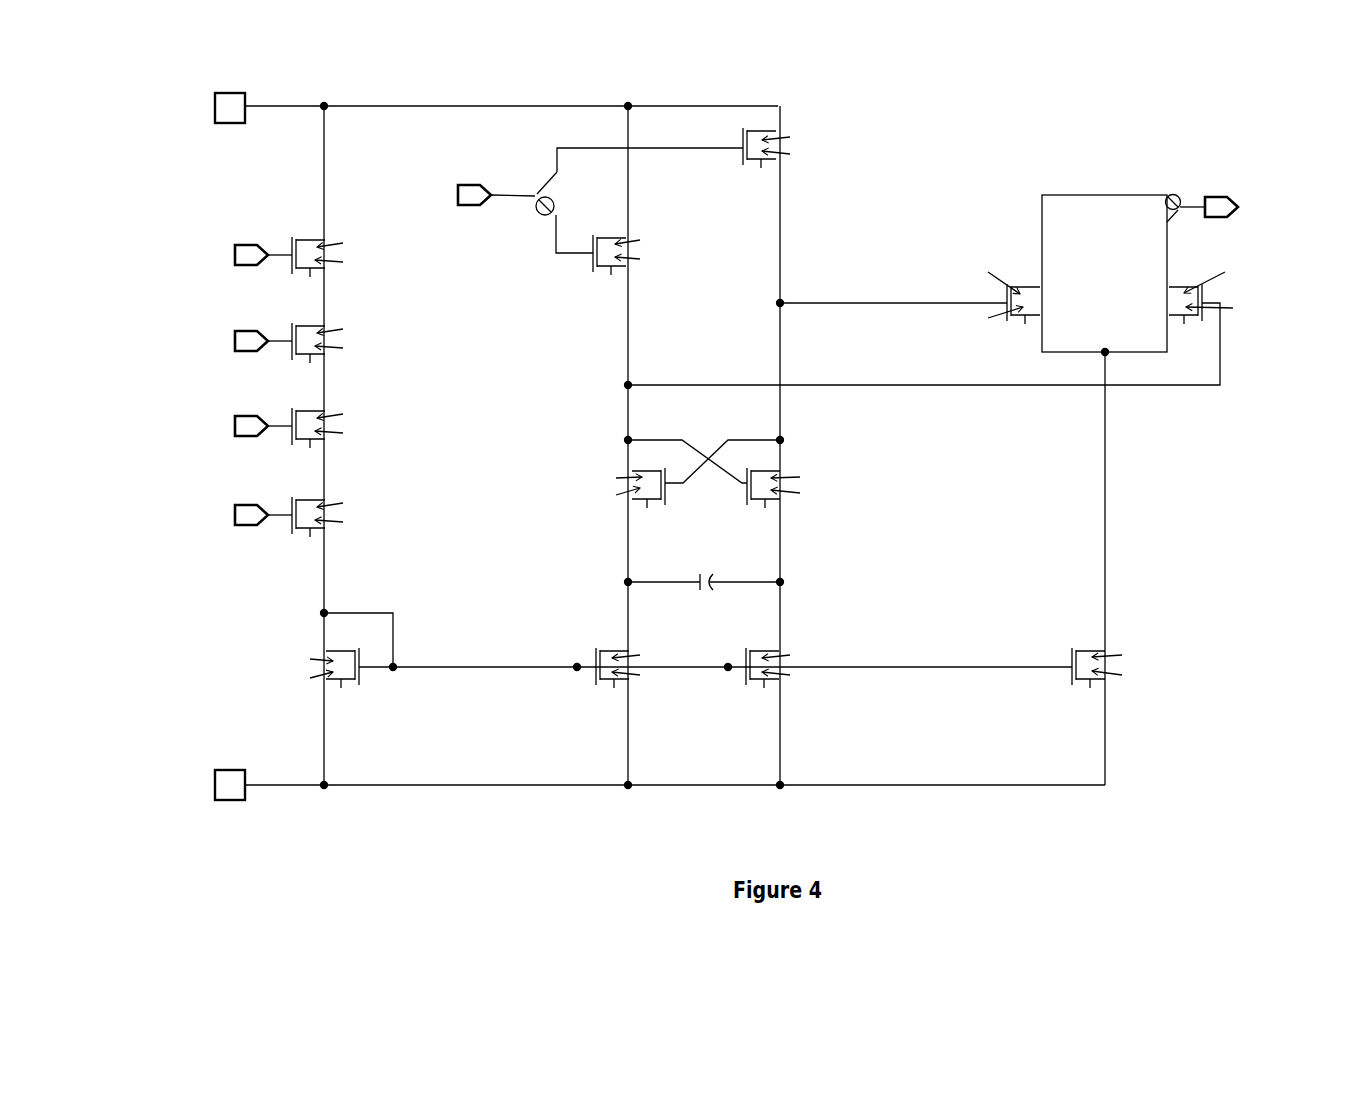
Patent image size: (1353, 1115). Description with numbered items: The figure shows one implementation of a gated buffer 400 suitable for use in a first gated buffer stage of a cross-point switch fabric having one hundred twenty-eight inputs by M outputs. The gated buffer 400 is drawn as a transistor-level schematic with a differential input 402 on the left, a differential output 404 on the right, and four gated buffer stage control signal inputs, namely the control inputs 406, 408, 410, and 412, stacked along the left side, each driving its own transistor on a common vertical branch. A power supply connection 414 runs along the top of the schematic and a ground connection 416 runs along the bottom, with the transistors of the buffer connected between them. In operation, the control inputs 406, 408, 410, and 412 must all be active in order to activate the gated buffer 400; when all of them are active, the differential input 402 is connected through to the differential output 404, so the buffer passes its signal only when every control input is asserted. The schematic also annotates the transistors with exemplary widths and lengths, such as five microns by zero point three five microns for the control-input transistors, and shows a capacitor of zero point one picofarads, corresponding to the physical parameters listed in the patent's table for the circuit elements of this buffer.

The gated buffer 400 is at (1050, 140).
The differential input 402 is at (502, 190).
The differential output 404 is at (1190, 200).
The control input 406 is at (239, 244).
The control input 408 is at (239, 330).
The control input 410 is at (239, 415).
The control input 412 is at (239, 505).
The power supply connection 414 is at (348, 104).
The ground connection 416 is at (273, 783).